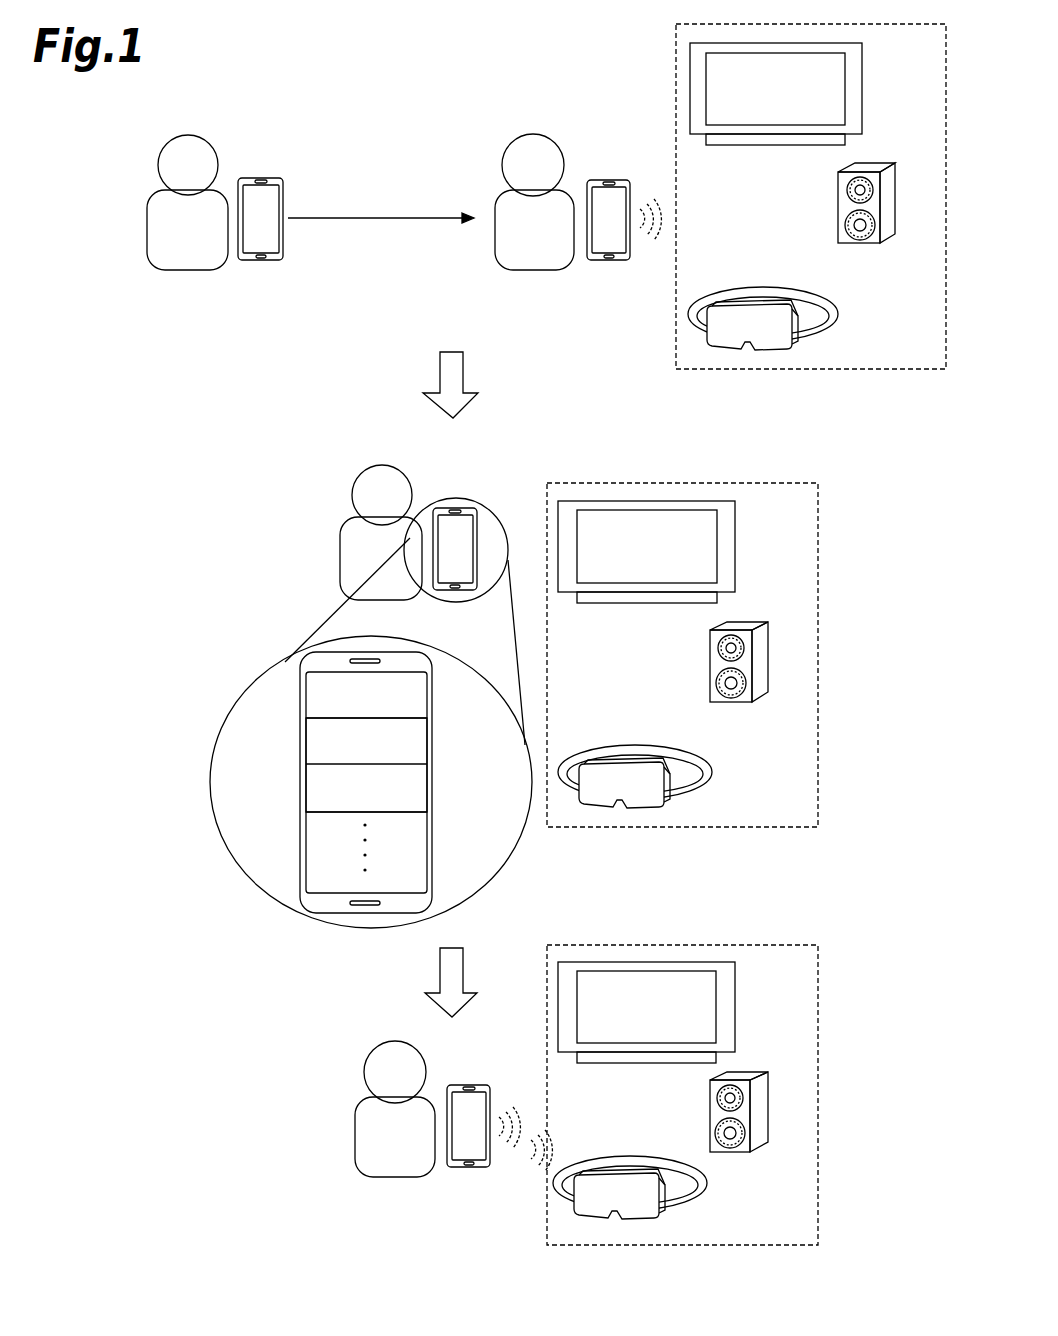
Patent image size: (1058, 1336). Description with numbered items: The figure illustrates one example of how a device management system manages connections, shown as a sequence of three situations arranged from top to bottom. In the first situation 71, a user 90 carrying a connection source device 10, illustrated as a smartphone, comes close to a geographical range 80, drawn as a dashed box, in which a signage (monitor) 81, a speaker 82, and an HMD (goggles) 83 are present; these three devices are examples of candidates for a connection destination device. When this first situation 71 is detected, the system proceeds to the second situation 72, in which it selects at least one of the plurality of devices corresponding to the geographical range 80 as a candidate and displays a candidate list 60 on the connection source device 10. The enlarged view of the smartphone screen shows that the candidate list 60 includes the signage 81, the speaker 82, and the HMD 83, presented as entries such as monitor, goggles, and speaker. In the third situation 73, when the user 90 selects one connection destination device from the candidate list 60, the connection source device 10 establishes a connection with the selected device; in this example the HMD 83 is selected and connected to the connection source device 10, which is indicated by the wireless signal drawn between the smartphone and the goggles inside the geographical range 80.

The connection source device 10 is at (263, 261).
The candidate list 60 is at (300, 791).
The situation 71 is at (126, 230).
The situation 72 is at (254, 590).
The situation 73 is at (328, 1131).
The geographical range 80 is at (676, 72).
The signage (monitor) 81 is at (862, 88).
The speaker 82 is at (886, 244).
The HMD (goggles) 83 is at (838, 324).
The user 90 is at (176, 272).